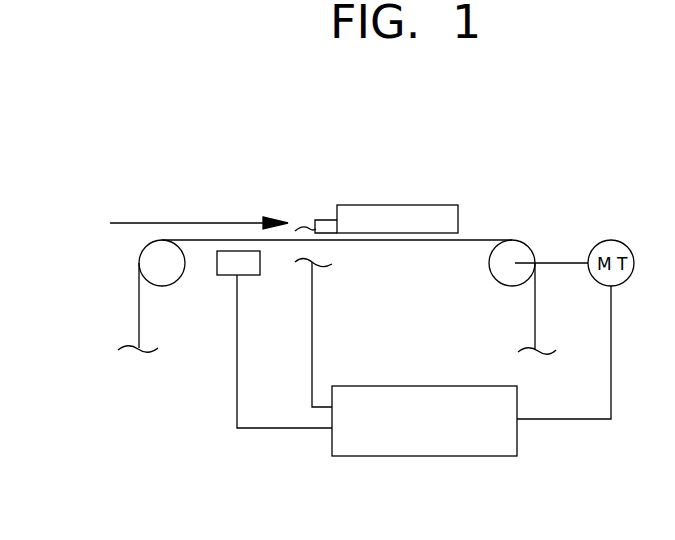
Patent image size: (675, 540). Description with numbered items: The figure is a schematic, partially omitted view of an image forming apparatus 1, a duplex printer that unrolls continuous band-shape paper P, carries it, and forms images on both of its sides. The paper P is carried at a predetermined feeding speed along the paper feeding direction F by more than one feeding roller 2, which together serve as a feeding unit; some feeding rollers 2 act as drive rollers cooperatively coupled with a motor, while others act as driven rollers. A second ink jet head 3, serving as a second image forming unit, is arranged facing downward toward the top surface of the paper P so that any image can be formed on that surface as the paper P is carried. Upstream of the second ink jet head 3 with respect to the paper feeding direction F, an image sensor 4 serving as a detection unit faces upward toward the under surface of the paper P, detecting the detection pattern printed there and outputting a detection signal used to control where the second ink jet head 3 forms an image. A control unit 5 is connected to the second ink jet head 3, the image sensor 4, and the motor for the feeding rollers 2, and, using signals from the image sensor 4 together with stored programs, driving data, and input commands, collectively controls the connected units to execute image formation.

The image forming apparatus 1 is at (493, 175).
The feeding roller 2 is at (173, 269).
The second ink jet head 3 is at (393, 215).
The image sensor 4 is at (250, 270).
The control unit 5 is at (475, 435).
The paper P is at (138, 303).
The paper feeding direction F is at (200, 182).